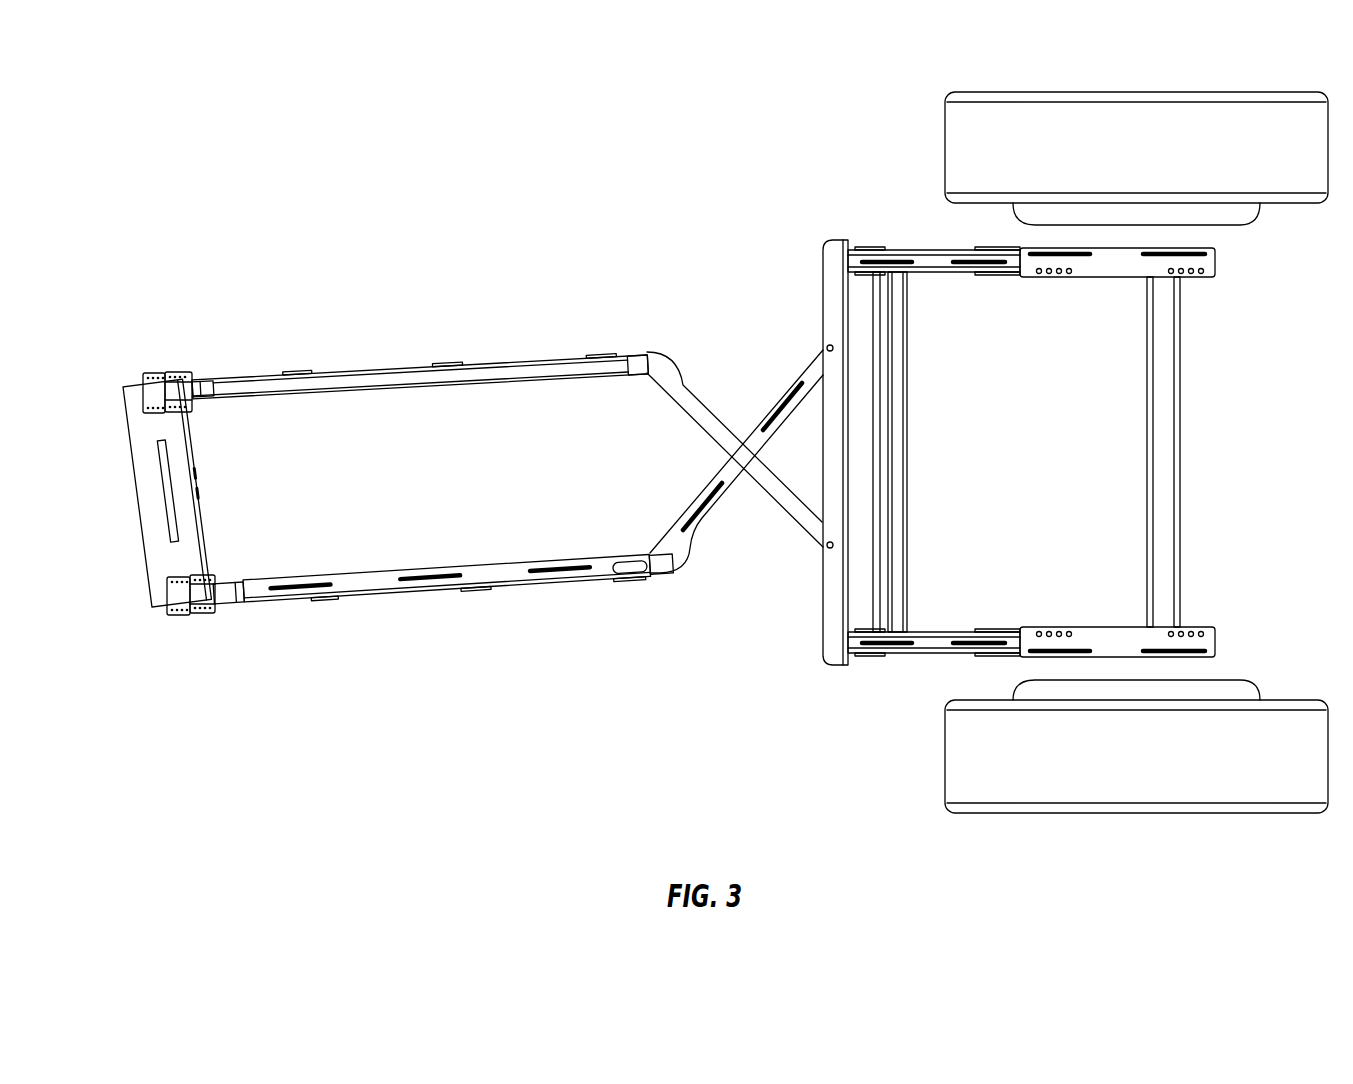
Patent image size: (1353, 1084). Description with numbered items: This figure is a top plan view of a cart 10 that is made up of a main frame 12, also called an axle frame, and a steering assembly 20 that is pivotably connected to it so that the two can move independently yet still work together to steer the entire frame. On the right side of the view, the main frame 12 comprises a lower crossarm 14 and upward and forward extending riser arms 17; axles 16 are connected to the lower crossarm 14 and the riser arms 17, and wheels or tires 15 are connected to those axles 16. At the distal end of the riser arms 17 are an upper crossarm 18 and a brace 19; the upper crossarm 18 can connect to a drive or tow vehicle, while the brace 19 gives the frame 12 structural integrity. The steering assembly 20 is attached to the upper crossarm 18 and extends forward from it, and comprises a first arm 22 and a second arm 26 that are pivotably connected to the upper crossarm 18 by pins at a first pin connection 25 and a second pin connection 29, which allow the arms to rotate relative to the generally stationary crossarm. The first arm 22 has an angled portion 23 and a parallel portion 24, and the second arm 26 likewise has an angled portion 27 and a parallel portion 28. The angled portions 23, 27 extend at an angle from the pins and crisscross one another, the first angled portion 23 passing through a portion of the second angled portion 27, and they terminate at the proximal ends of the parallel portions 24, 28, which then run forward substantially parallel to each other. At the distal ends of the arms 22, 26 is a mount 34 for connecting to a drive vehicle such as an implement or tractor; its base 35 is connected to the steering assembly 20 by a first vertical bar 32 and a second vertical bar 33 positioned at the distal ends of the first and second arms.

The cart 10 is at (420, 190).
The main frame 12 is at (1212, 360).
The lower crossarm 14 is at (1168, 458).
The wheels or tires 15 is at (955, 130).
The axles 16 is at (1210, 270).
The riser arm 17 is at (935, 252).
The upper crossarm 18 is at (828, 277).
The brace 19 is at (907, 393).
The steering assembly 20 is at (352, 298).
The first arm 22 is at (497, 352).
The angled portion of first arm 23 is at (793, 522).
The parallel portion of first arm 24 is at (357, 378).
The first pin connection 25 is at (829, 548).
The second arm 26 is at (392, 605).
The angled portion of second arm 27 is at (787, 388).
The parallel portion of second arm 28 is at (508, 588).
The second pin connection 29 is at (829, 348).
The first vertical bar 32 is at (148, 385).
The second vertical bar 33 is at (172, 605).
The mount 34 is at (205, 442).
The base 35 is at (150, 460).